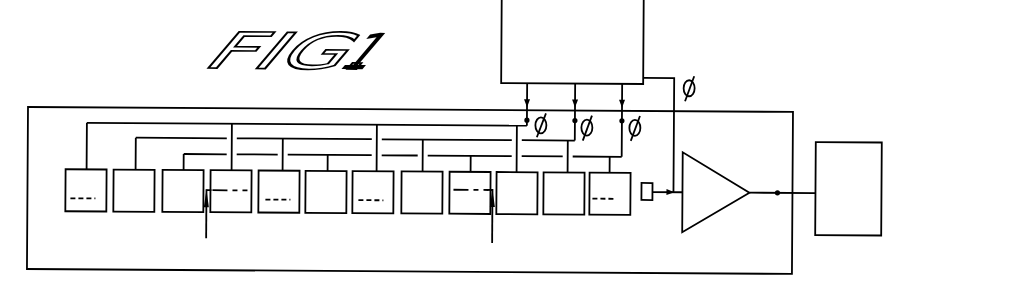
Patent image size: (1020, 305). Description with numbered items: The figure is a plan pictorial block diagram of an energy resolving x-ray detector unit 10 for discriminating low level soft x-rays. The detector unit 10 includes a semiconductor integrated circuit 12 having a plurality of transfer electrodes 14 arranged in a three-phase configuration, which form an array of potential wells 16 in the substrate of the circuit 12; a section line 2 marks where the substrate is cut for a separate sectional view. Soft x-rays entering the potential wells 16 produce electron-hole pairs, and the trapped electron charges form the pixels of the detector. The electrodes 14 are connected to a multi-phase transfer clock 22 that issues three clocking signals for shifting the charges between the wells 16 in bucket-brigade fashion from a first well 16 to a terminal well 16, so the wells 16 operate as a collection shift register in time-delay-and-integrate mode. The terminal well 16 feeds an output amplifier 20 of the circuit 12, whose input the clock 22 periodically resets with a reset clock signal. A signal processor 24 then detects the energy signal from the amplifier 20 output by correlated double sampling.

The detector unit 10 is at (465, 74).
The semiconductor integrated circuit 12 is at (370, 88).
The transfer electrodes 14 is at (72, 169).
The potential wells 16 is at (347, 186).
The section line for FIG. 2 is at (349, 230).
The output amplifier 20 is at (720, 146).
The multi-phase transfer clock 22 is at (643, 38).
The signal processor 24 is at (851, 115).